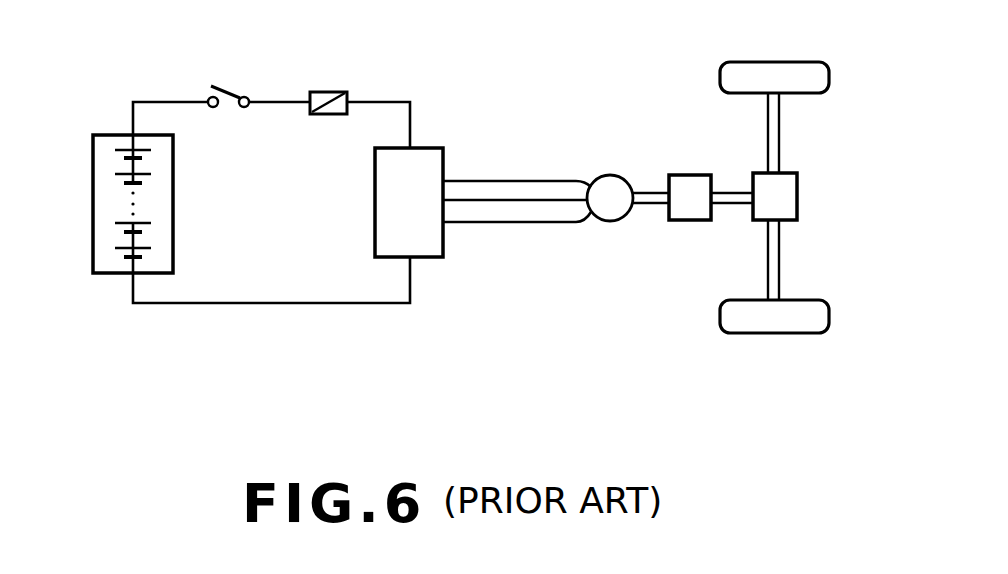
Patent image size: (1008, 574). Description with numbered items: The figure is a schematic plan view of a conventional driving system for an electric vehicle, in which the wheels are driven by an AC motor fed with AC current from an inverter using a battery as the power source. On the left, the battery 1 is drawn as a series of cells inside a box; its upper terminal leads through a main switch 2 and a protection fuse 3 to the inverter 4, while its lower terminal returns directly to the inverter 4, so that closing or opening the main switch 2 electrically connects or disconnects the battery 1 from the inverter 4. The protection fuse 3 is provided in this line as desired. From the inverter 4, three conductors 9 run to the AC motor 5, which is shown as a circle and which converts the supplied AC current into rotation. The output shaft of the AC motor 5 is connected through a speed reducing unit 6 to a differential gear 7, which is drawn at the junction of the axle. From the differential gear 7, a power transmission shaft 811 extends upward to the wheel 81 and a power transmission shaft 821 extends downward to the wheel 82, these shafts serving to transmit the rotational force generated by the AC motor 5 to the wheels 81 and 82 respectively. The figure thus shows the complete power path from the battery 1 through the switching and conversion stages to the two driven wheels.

The battery 1 is at (93, 222).
The main switch 2 is at (222, 85).
The protection fuse 3 is at (326, 90).
The inverter 4 is at (426, 148).
The AC motor 5 is at (609, 175).
The speed reducing unit 6 is at (683, 175).
The differential gear 7 is at (797, 194).
The conductors 9 is at (504, 188).
The wheel 81 is at (786, 62).
The wheel 82 is at (771, 333).
The power transmission shaft 811 is at (781, 135).
The power transmission shaft 821 is at (781, 260).